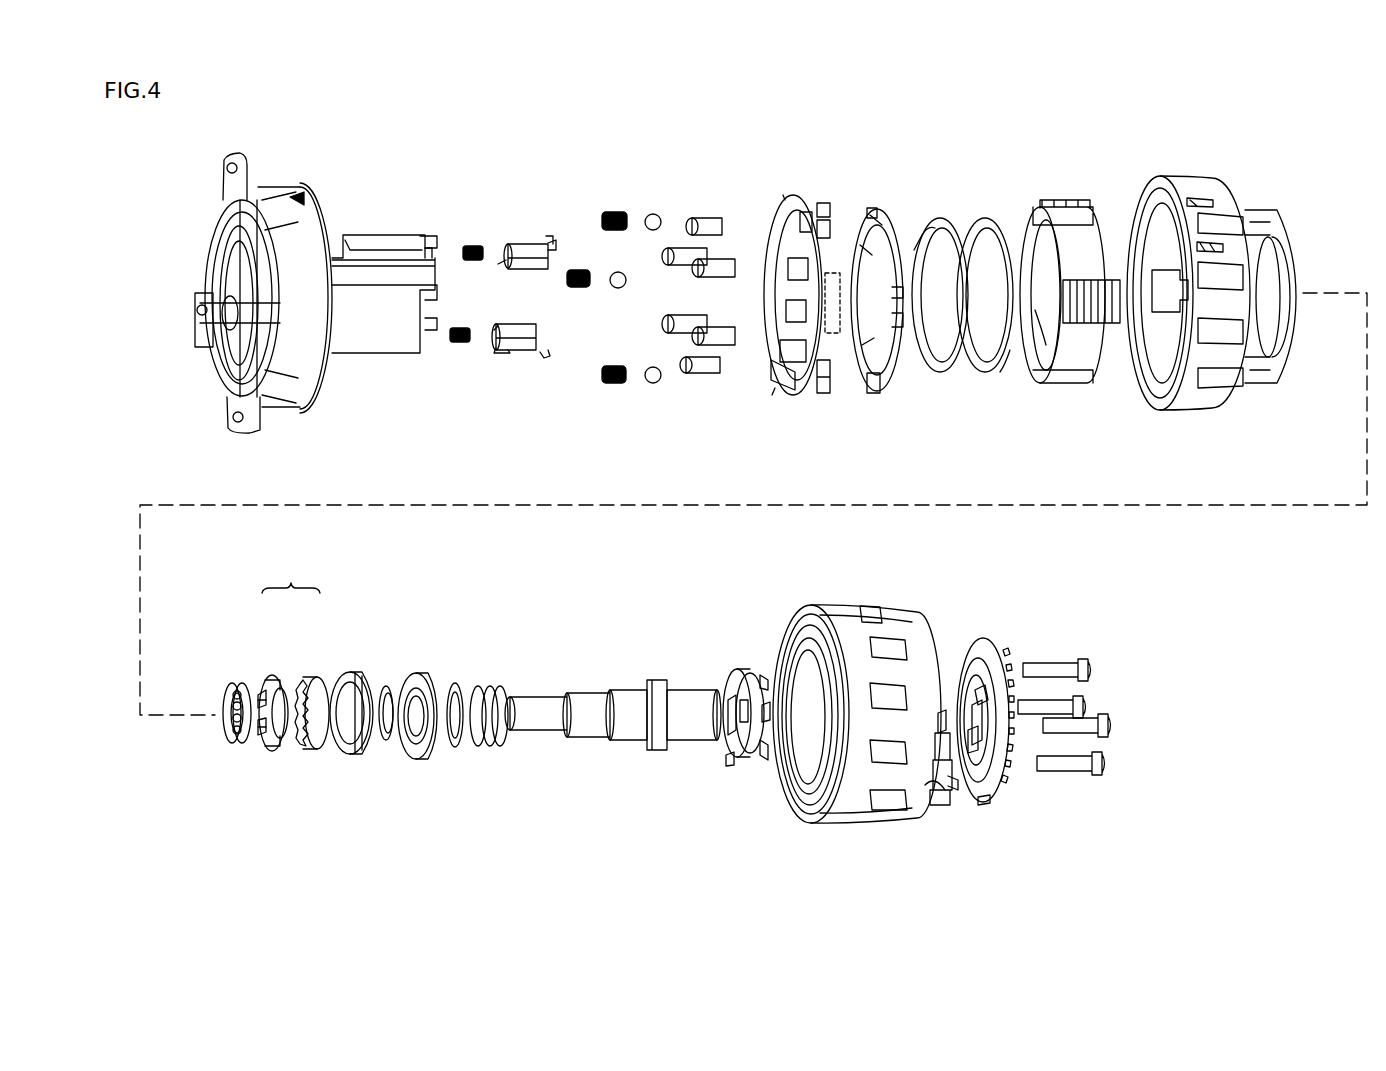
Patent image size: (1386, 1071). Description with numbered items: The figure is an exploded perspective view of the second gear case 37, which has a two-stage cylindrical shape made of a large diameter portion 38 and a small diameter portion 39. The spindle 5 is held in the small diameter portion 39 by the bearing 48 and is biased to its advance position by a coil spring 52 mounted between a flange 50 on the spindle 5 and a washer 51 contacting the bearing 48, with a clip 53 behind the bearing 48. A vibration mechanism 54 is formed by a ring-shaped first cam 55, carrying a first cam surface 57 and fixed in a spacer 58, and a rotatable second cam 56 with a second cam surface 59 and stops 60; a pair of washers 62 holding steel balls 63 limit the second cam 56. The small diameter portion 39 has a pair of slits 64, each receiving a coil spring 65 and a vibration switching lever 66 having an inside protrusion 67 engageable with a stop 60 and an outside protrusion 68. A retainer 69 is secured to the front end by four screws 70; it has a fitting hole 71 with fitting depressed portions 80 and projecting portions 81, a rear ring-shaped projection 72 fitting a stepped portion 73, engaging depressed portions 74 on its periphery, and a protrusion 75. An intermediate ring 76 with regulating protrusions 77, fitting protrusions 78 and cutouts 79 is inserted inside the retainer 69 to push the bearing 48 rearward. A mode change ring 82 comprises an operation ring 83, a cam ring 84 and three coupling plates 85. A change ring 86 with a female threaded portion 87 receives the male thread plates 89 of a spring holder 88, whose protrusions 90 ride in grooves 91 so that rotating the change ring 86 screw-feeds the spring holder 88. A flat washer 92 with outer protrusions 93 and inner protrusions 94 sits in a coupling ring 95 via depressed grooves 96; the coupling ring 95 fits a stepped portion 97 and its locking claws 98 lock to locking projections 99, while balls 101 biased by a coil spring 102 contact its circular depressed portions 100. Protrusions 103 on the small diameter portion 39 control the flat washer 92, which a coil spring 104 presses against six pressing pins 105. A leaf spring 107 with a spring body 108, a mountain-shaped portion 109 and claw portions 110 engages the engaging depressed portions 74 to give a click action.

The spindle 5 is at (613, 671).
The second gear case 37 is at (318, 262).
The large diameter portion 38 is at (288, 195).
The small diameter portion 39 is at (380, 236).
The bearing 48 is at (425, 675).
The flange 50 is at (655, 680).
The washer 51 is at (456, 684).
The coil spring 52 is at (482, 688).
The clip 53 is at (388, 687).
The vibration mechanism 54 is at (291, 572).
The first cam 55 is at (310, 705).
The second cam 56 is at (255, 709).
The first cam surface 57 is at (318, 750).
The spacer 58 is at (352, 673).
The second cam surface 59 is at (282, 740).
The stop 60 is at (264, 690).
The washer 62 is at (210, 692).
The steel ball 63 is at (234, 695).
The slit 64 is at (400, 248).
The coil spring 65 is at (473, 245).
The vibration switching lever 66 is at (516, 298).
The inside protrusion 67 is at (496, 325).
The outside protrusion 68 is at (552, 240).
The retainer 69 is at (987, 710).
The screw 70 is at (1080, 660).
The fitting hole 71 is at (985, 802).
The projection 72 is at (978, 688).
The stepped portion 73 is at (428, 238).
The engaging depressed portion 74 is at (1000, 650).
The protrusion 75 is at (990, 800).
The intermediate ring 76 is at (741, 703).
The regulating protrusion 77 is at (738, 672).
The fitting protrusion 78 is at (726, 690).
The cutout 79 is at (762, 680).
The fitting depressed portion 80 is at (975, 700).
The projecting portion 81 is at (972, 700).
The mode change ring 82 is at (1258, 205).
The operation ring 83 is at (1214, 282).
The cam ring 84 is at (1278, 270).
The coupling plate 85 is at (1260, 210).
The change ring 86 is at (857, 708).
The female threaded portion 87 is at (812, 805).
The spring holder 88 is at (1055, 289).
The male thread plate 89 is at (1038, 202).
The protrusion 90 is at (1040, 330).
The groove 91 is at (384, 320).
The flat washer 92 is at (874, 215).
The outer protrusion 93 is at (892, 291).
The inner protrusion 94 is at (876, 208).
The coupling ring 95 is at (784, 198).
The depressed groove 96 is at (770, 240).
The stepped portion 97 is at (1138, 380).
The locking claw 98 is at (822, 203).
The locking projection 99 is at (1182, 380).
The circular depressed portion 100 is at (790, 293).
The ball 101 is at (653, 214).
The coil spring 102 is at (610, 211).
The protrusion 103 is at (340, 240).
The coil spring 104 is at (958, 220).
The pressing pin 105 is at (708, 218).
The leaf spring 107 is at (944, 800).
The spring body 108 is at (938, 800).
The mountain-shaped portion 109 is at (948, 790).
The claw portion 110 is at (919, 738).